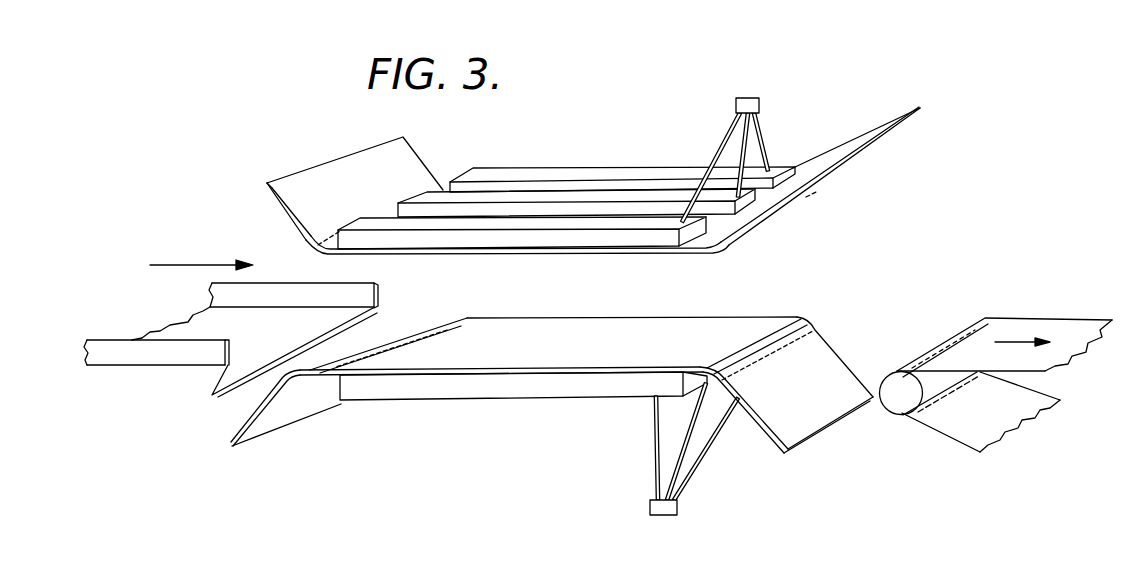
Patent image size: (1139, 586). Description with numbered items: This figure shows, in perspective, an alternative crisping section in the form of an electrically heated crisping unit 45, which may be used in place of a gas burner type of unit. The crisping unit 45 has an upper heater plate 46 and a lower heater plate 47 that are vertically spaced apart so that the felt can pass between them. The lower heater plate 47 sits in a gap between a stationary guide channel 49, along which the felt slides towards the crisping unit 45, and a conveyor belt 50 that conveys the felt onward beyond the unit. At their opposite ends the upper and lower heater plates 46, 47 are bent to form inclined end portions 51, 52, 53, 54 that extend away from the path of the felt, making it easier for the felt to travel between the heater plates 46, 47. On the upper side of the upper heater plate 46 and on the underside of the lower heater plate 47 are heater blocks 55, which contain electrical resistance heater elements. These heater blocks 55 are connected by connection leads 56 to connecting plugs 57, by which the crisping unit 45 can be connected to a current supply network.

The electrically heated crisping unit 45 is at (528, 260).
The upper heater plate 46 is at (705, 238).
The lower heater plate 47 is at (601, 341).
The stationary guide channel 49 is at (277, 323).
The conveyor belt 50 is at (1007, 405).
The inclined end portion 51 is at (372, 196).
The inclined end portion 52 is at (833, 169).
The inclined end portion 53 is at (828, 381).
The inclined end portion 54 is at (310, 393).
The heater blocks 55 is at (553, 220).
The connection leads 56 is at (760, 137).
The connecting plugs 57 is at (750, 100).